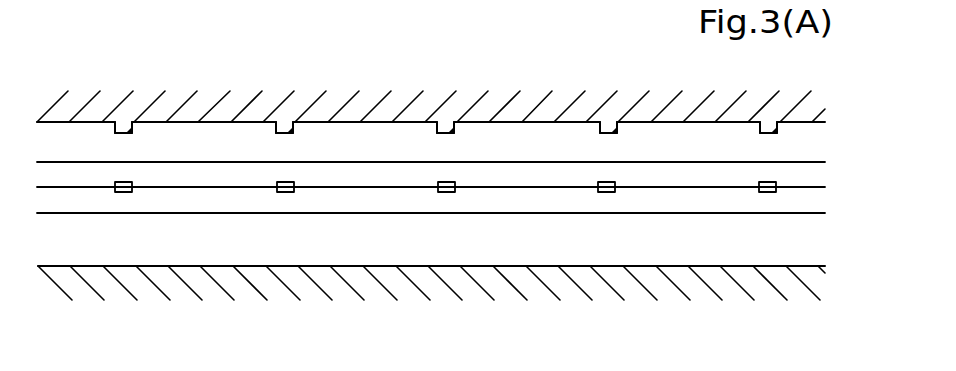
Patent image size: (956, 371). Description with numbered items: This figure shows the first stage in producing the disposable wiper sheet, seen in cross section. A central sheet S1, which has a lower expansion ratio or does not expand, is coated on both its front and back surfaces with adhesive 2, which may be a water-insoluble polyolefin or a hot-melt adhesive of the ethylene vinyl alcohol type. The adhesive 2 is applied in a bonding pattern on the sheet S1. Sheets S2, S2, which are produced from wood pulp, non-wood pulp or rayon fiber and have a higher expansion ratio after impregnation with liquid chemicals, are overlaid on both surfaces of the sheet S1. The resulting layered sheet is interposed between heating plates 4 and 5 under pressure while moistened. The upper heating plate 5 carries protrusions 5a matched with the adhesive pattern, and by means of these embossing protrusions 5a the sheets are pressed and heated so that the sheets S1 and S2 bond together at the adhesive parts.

The adhesive 2 is at (117, 192).
The heating plate 4 is at (645, 283).
The heating plate 5 is at (641, 108).
The protrusions 5a is at (598, 134).
The sheet S1 is at (200, 189).
The sheet S2 is at (352, 160).